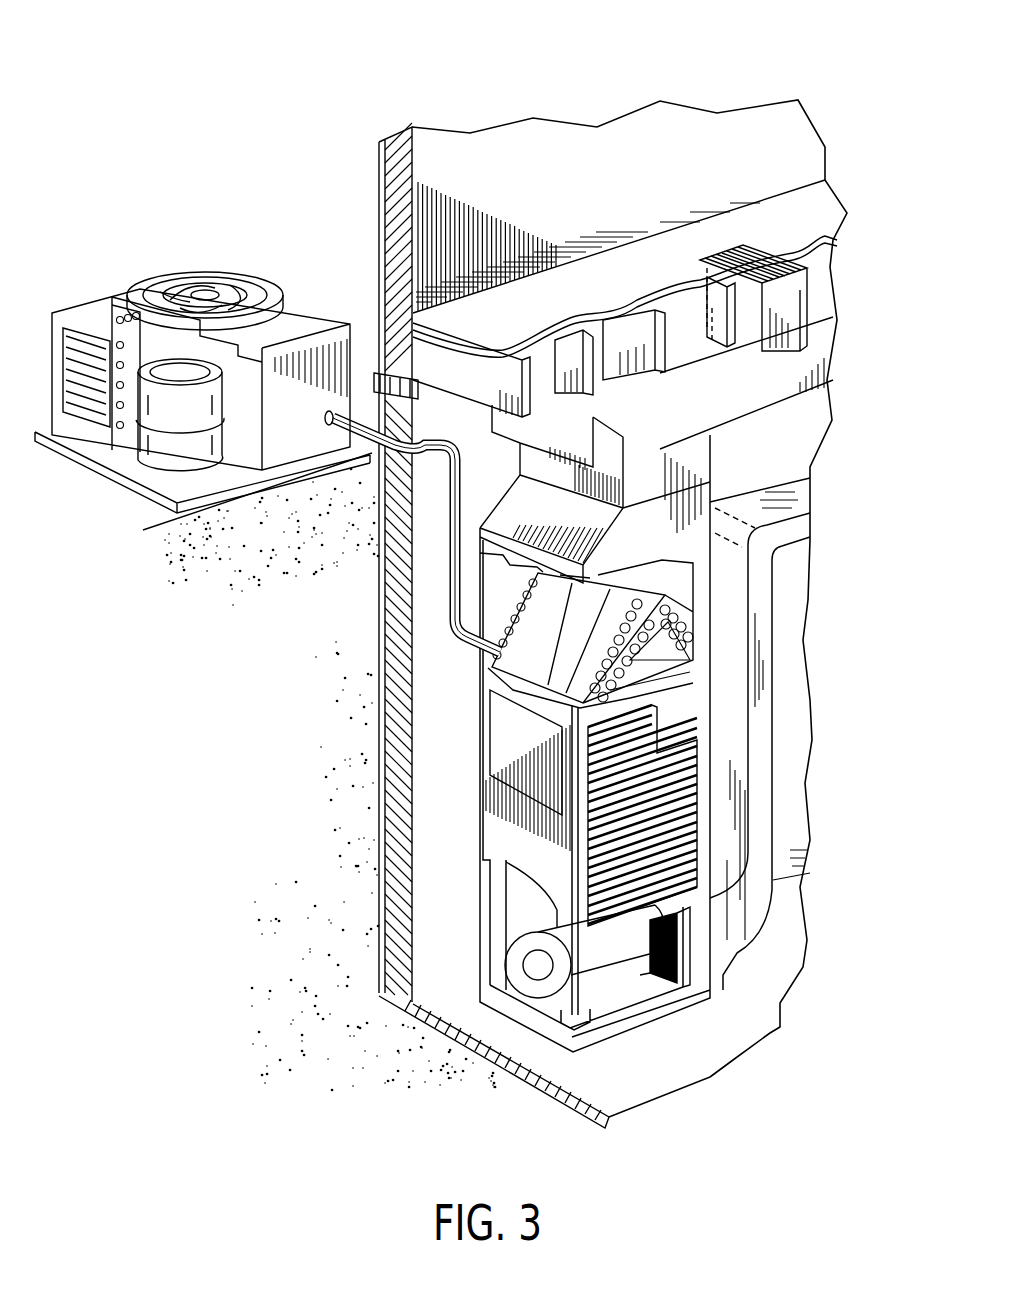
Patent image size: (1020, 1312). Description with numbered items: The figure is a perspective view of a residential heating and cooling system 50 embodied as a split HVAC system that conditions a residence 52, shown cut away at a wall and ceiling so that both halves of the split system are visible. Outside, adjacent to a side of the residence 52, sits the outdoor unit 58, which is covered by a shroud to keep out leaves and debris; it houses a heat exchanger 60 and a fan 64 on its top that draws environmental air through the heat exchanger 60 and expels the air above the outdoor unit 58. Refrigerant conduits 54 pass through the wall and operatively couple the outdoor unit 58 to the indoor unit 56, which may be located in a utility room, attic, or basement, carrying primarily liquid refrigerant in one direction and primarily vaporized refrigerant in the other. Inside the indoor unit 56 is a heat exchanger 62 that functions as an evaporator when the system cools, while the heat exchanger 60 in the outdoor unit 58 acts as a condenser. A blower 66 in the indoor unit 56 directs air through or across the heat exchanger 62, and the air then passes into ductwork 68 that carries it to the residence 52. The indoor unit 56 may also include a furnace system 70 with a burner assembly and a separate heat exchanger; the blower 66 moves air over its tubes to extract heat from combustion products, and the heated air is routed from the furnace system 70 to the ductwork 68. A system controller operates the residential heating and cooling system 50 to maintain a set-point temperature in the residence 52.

The residential heating and cooling system 50 is at (203, 96).
The residence 52 is at (520, 147).
The refrigerant conduits 54 is at (450, 540).
The indoor unit 56 is at (460, 793).
The outdoor unit 58 is at (202, 348).
The heat exchanger 60 is at (133, 357).
The heat exchanger 62 is at (543, 662).
The fan 64 is at (228, 272).
The blower 66 is at (534, 990).
The ductwork 68 is at (780, 340).
The furnace system 70 is at (528, 680).